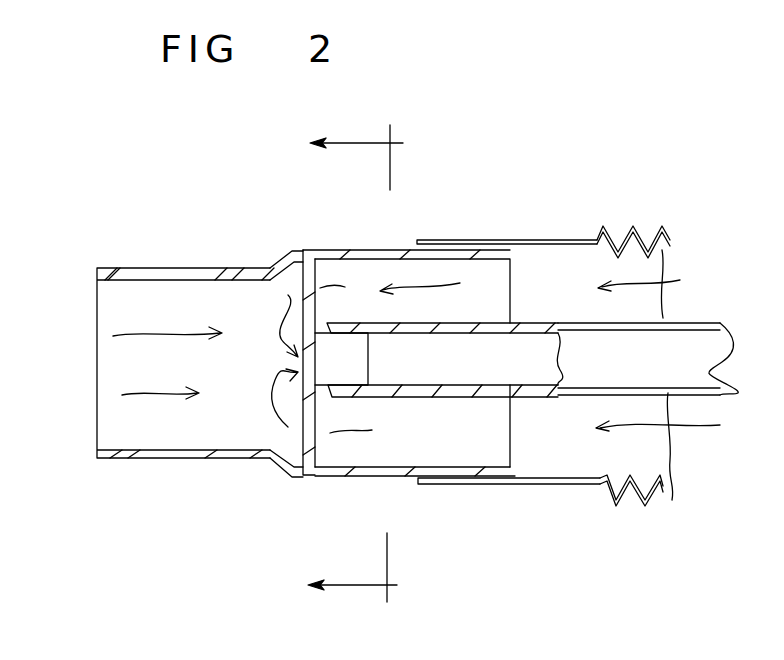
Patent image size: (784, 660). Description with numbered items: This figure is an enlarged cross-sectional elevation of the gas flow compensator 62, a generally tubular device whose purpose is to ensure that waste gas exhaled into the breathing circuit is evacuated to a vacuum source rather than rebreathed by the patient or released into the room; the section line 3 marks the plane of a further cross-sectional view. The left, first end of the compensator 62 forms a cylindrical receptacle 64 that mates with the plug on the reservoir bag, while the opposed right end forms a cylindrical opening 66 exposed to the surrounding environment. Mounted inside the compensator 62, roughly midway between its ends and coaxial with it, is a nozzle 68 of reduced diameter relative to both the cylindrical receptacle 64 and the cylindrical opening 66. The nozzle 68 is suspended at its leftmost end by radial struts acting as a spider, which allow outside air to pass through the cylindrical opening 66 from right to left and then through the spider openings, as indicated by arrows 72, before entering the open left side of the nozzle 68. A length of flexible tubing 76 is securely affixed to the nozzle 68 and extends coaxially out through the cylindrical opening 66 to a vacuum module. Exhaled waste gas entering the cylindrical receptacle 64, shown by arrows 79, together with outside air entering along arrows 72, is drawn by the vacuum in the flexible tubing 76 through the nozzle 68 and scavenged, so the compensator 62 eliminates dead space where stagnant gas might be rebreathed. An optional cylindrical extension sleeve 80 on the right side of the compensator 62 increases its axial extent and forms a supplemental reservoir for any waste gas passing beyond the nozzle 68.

The section line 3- 3 is at (367, 359).
The gas flow compensator 62 is at (548, 140).
The cylindrical receptacle 64 is at (172, 458).
The cylindrical opening 66 is at (463, 255).
The nozzle 68 is at (368, 363).
The arrows 72 is at (281, 300).
The flexible tubing 76 is at (688, 323).
The arrows 79 is at (155, 333).
The cylindrical extension sleeve 80 is at (568, 485).